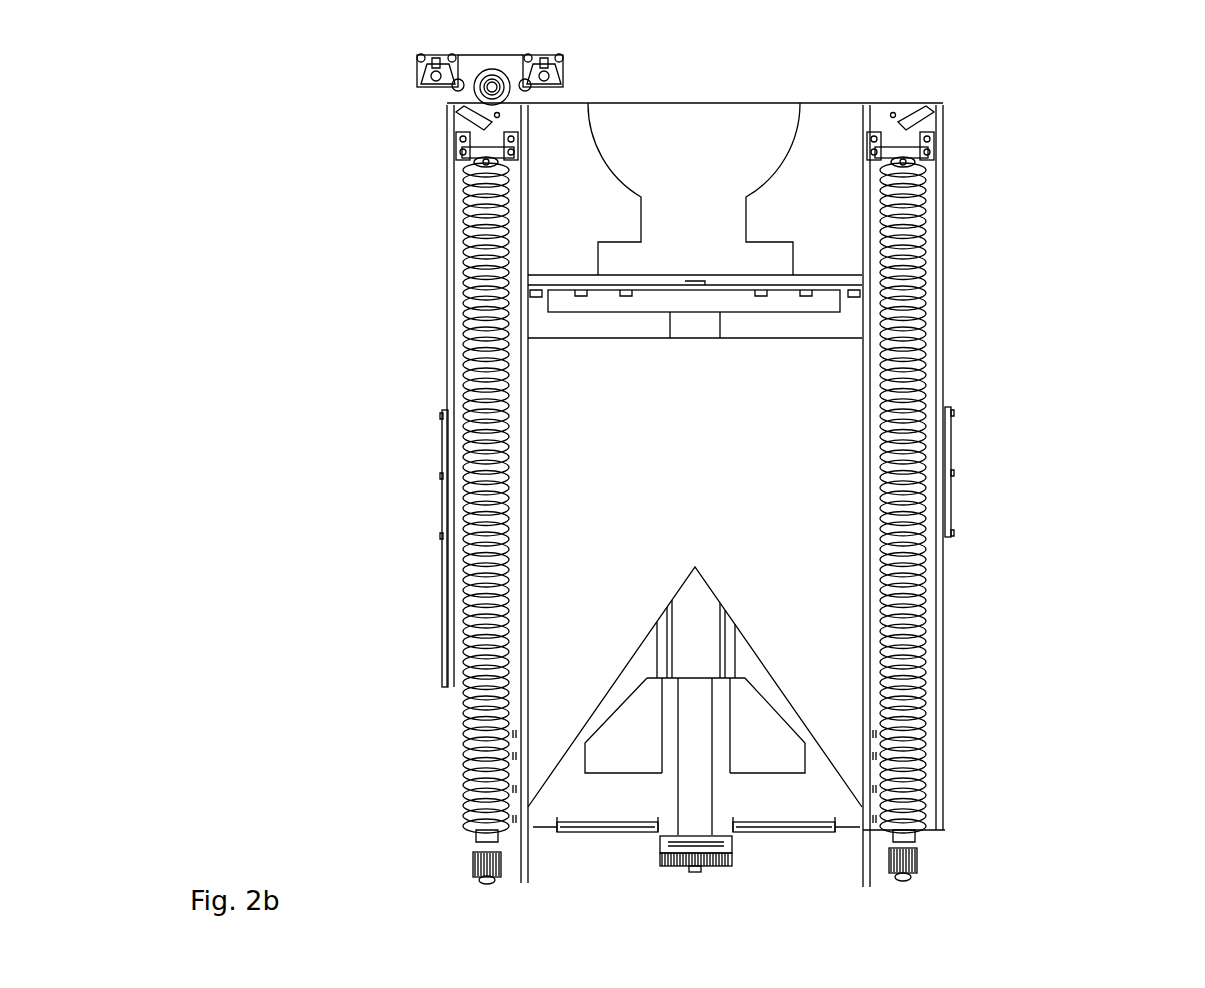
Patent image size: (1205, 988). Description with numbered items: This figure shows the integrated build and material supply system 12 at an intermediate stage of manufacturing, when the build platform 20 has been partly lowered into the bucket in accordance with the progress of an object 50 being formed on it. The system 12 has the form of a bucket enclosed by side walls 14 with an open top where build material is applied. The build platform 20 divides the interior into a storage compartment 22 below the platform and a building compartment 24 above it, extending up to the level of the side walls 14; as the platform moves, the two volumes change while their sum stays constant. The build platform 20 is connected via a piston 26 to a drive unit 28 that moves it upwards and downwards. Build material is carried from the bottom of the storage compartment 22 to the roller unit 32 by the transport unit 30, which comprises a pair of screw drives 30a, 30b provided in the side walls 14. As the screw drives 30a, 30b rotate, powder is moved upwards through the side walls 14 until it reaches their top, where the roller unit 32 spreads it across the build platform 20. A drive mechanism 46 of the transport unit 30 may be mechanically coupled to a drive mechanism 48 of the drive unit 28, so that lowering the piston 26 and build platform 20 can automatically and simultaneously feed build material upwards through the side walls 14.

The integrated build and material supply system 12 is at (1080, 265).
The side walls 14 is at (440, 450).
The build platform 20 is at (813, 296).
The storage compartment 22 is at (705, 506).
The building compartment 24 is at (827, 220).
The piston 26 is at (697, 312).
The drive unit 28 is at (716, 876).
The transport unit 30 is at (452, 752).
The screw drive 30a is at (485, 588).
The screw drive 30b is at (915, 540).
The roller unit 32 is at (488, 50).
The drive mechanism of the transport unit 46 is at (480, 878).
The drive mechanism of the drive unit 48 is at (668, 867).
The object 50 is at (705, 177).